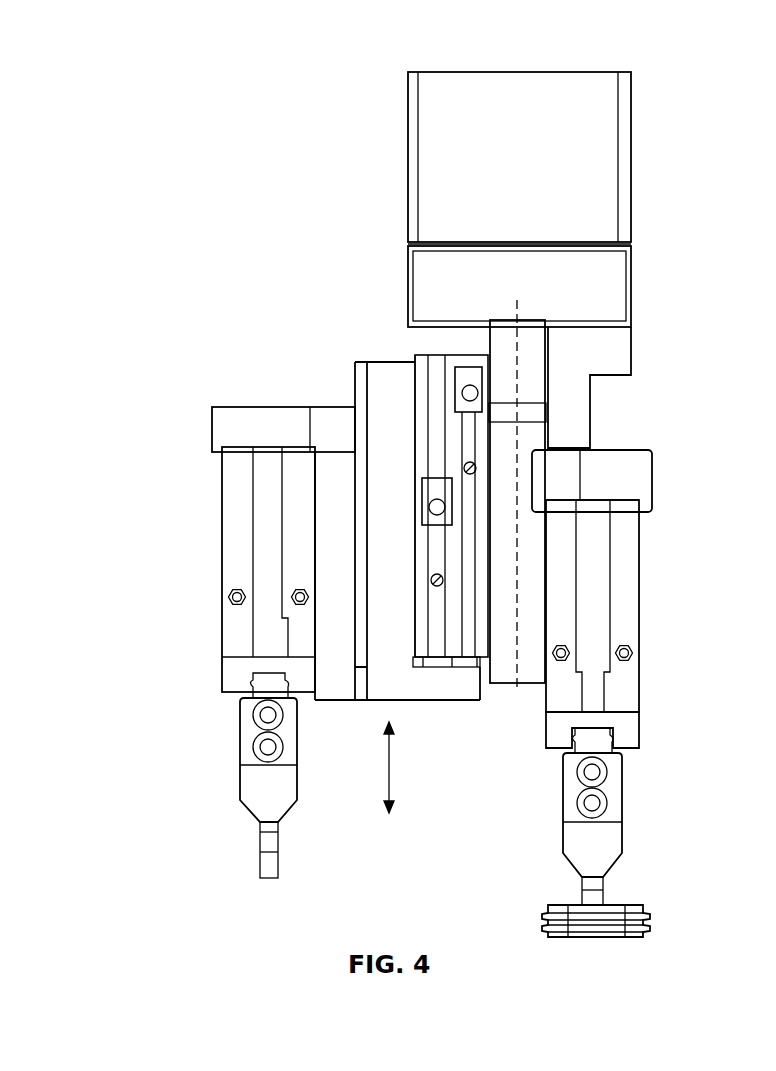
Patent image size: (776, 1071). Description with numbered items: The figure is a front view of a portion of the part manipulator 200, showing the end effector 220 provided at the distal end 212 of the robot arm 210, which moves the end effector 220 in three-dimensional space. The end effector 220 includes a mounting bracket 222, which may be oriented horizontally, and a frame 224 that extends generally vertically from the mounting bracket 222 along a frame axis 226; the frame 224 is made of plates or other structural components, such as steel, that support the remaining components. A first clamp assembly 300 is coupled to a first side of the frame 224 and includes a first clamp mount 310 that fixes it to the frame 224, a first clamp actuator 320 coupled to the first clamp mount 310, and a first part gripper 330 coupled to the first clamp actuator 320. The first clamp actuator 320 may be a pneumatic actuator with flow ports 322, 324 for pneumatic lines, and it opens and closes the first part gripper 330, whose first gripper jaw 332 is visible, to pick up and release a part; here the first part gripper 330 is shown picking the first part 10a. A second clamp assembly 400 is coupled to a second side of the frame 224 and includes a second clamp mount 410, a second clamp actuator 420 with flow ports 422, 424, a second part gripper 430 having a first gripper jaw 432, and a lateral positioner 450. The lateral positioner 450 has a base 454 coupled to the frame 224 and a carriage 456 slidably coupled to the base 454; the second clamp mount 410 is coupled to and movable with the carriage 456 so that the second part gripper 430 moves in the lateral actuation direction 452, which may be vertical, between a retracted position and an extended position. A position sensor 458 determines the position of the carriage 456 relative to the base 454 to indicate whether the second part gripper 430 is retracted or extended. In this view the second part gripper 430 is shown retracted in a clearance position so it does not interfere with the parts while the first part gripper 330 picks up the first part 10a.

The first part 10a is at (647, 915).
The part manipulator 200 is at (306, 138).
The robot arm 210 is at (612, 120).
The distal end 212 is at (568, 242).
The end effector 220 is at (280, 303).
The mounting bracket 222 is at (600, 288).
The frame 224 is at (510, 652).
The frame axis 226 is at (517, 397).
The first clamp assembly 300 is at (680, 564).
The first clamp mount 310 is at (627, 457).
The first clamp actuator 320 is at (627, 620).
The flow port 322 is at (562, 662).
The flow port 324 is at (625, 662).
The first part gripper 330 is at (646, 822).
The first gripper jaw 332 is at (607, 836).
The second clamp assembly 400 is at (155, 527).
The second clamp mount 410 is at (242, 415).
The second clamp actuator 420 is at (227, 558).
The flow port 422 is at (291, 598).
The flow port 424 is at (228, 597).
The second part gripper 430 is at (200, 793).
The first gripper jaw 432 is at (252, 792).
The lateral positioner 450 is at (379, 338).
The lateral actuation direction 452 is at (383, 772).
The base 454 is at (432, 403).
The carriage 456 is at (422, 507).
The position sensor 458 is at (383, 467).